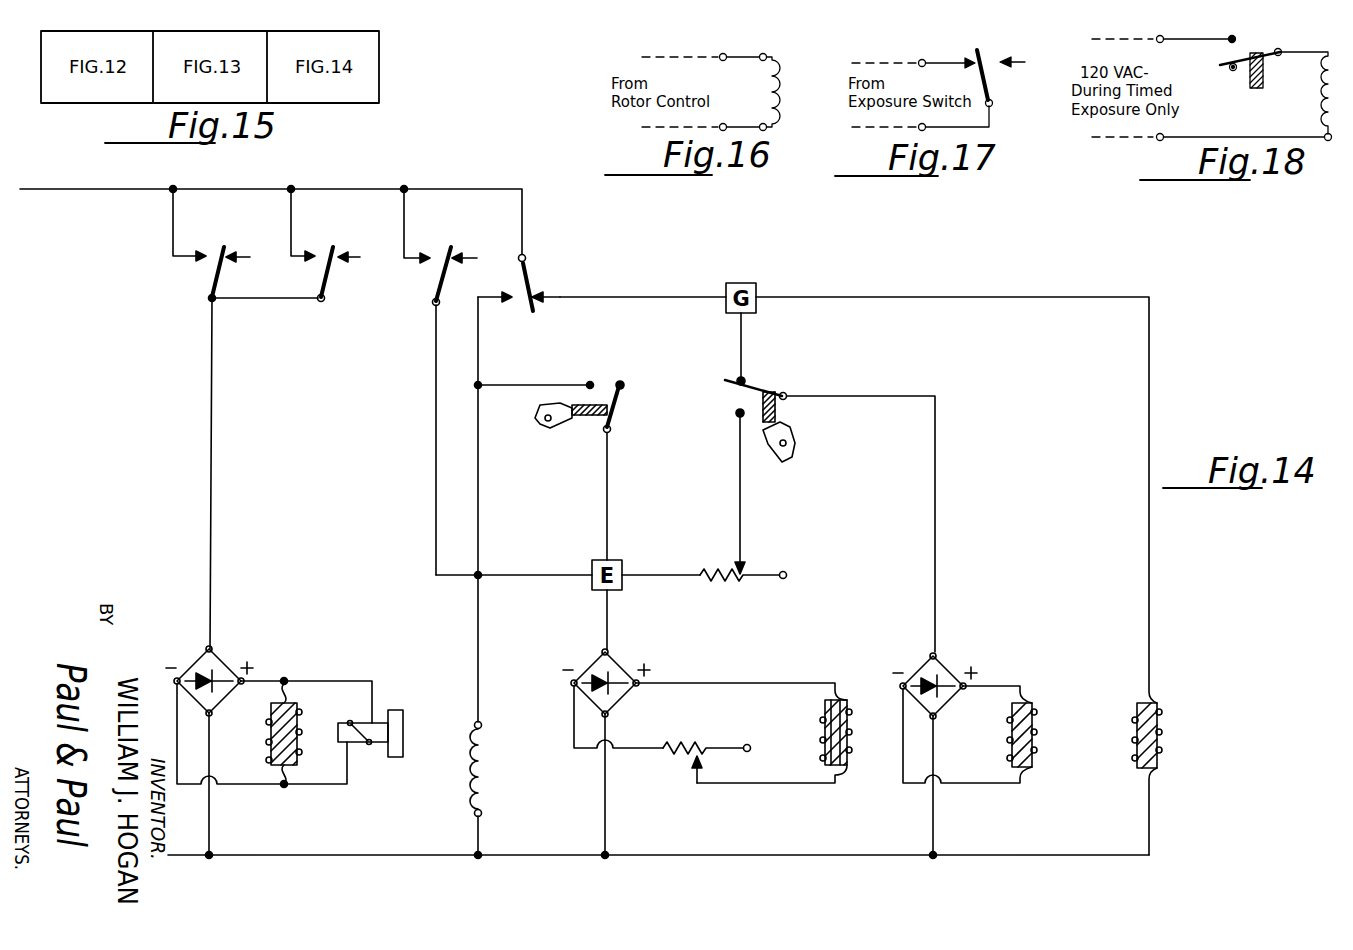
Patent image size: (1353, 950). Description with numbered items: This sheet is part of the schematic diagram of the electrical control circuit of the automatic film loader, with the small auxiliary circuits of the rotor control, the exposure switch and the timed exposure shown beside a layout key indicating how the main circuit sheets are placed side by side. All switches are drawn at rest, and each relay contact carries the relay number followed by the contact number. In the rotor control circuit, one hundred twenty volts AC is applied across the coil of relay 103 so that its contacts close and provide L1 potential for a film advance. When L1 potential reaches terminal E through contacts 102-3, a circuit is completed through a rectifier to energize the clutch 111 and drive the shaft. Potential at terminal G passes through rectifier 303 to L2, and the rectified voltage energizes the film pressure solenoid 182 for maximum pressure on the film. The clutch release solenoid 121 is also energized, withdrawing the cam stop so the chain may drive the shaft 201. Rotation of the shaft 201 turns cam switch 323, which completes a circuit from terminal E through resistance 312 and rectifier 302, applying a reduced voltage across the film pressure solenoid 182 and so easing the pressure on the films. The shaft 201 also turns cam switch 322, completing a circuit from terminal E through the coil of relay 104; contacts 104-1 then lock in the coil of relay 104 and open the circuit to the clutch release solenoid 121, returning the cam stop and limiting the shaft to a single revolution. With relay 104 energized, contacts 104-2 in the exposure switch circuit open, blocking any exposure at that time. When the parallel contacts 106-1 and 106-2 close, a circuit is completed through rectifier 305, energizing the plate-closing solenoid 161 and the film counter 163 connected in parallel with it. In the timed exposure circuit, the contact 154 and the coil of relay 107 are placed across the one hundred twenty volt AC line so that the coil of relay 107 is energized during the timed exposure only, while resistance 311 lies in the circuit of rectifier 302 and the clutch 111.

In FIG. 16, the relay 103 is at (781, 87).
In FIG. 17, the contacts 2 of relay 104 104-2 is at (991, 52).
In FIG. 18, the timed exposure relay contact 154 is at (1244, 50).
In FIG. 18, the relay 107 is at (1320, 94).
In FIG. 14, the contacts 02 of relay 106 106-2 is at (212, 254).
In FIG. 14, the contacts 01 of relay 106 106-1 is at (322, 254).
In FIG. 14, the contacts 03 of relay 102 102-3 is at (437, 252).
In FIG. 14, the contacts 01 of relay 104 104-1 is at (524, 303).
In FIG. 14, the cam switch 322 is at (599, 383).
In FIG. 14, the shaft 201 is at (537, 424).
In FIG. 14, the cam switch 323 is at (738, 397).
In FIG. 14, the resistance 312 is at (747, 583).
In FIG. 14, the rectifier 305 is at (219, 668).
In FIG. 14, the plate-closing solenoid 161 is at (289, 716).
In FIG. 14, the film counter 163 is at (397, 716).
In FIG. 14, the relay 104 is at (477, 773).
In FIG. 14, the rectifier 302 is at (617, 676).
In FIG. 14, the potentiometer 311 is at (668, 752).
In FIG. 14, the clutch 111 is at (822, 707).
In FIG. 14, the rectifier 303 is at (940, 674).
In FIG. 14, the film pressure solenoid 182 is at (1033, 713).
In FIG. 14, the clutch release solenoid 121 is at (1137, 747).